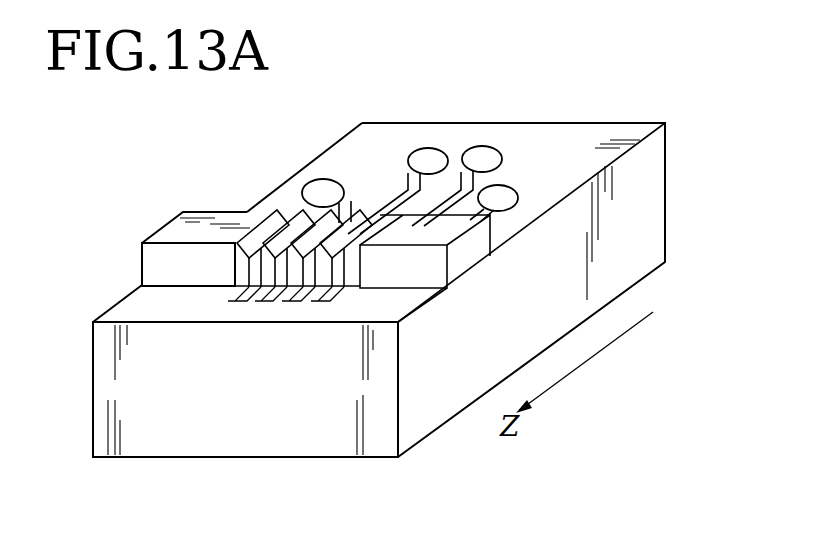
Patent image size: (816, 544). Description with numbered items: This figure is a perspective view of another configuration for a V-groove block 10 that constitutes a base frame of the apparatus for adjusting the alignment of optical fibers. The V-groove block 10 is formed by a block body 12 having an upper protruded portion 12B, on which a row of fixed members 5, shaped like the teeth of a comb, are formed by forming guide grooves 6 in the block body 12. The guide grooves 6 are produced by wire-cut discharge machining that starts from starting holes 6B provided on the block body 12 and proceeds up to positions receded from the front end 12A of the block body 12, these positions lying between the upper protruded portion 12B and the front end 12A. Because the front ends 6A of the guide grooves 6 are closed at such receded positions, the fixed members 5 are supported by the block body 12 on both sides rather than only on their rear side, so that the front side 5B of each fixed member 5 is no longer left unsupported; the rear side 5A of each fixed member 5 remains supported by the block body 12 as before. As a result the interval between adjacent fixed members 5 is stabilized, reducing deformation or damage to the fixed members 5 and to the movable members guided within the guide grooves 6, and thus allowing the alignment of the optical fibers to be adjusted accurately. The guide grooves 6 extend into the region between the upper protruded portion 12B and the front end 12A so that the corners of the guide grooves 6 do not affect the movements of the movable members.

The V-groove block 10 is at (480, 110).
The block body 12 is at (133, 313).
The front end of the block body 12A is at (134, 437).
The upper protruded portion 12B is at (173, 234).
The fixed members 5 is at (306, 272).
The electrode top plate 5A is at (247, 238).
The front side of the fixed members 5B is at (246, 312).
The guide grooves 6 is at (258, 270).
The front ends of the guide grooves 6A is at (233, 310).
The starting holes 6B is at (338, 190).